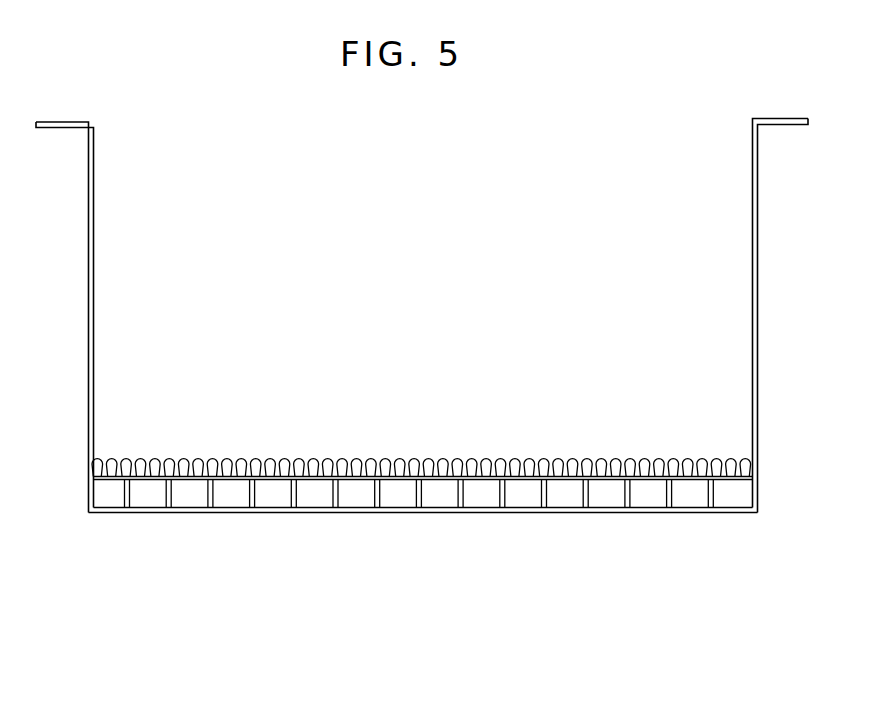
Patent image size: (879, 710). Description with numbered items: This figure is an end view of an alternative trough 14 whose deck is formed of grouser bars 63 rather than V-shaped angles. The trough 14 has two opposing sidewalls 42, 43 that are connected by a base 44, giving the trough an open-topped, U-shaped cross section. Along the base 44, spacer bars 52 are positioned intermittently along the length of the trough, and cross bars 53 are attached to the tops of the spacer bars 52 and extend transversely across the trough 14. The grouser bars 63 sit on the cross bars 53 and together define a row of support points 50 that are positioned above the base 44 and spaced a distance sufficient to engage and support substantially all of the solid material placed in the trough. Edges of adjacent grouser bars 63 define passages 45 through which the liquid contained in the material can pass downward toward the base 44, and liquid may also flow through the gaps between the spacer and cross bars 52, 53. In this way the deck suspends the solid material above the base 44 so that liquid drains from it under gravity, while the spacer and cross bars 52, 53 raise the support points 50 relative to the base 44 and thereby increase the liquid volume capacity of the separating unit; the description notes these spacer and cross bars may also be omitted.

The trough 14 is at (422, 357).
The sidewall 42 is at (96, 260).
The sidewall 43 is at (752, 223).
The base 44 is at (557, 510).
The passages 45 is at (535, 456).
The support points 50 is at (421, 420).
The spacer bars 52 is at (335, 495).
The cross bars 53 is at (423, 536).
The grouser bars 63 is at (160, 458).